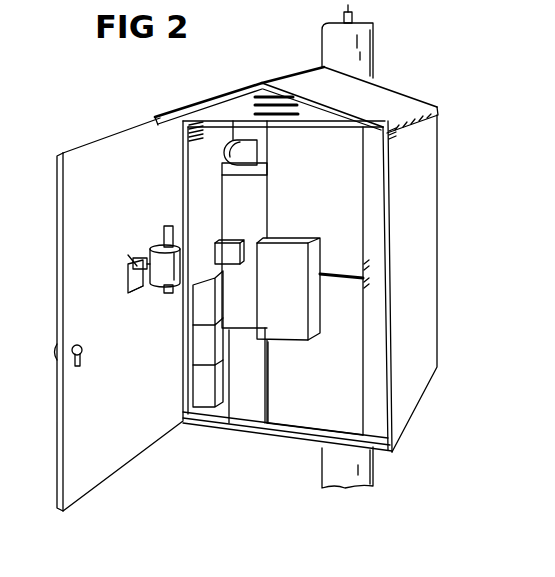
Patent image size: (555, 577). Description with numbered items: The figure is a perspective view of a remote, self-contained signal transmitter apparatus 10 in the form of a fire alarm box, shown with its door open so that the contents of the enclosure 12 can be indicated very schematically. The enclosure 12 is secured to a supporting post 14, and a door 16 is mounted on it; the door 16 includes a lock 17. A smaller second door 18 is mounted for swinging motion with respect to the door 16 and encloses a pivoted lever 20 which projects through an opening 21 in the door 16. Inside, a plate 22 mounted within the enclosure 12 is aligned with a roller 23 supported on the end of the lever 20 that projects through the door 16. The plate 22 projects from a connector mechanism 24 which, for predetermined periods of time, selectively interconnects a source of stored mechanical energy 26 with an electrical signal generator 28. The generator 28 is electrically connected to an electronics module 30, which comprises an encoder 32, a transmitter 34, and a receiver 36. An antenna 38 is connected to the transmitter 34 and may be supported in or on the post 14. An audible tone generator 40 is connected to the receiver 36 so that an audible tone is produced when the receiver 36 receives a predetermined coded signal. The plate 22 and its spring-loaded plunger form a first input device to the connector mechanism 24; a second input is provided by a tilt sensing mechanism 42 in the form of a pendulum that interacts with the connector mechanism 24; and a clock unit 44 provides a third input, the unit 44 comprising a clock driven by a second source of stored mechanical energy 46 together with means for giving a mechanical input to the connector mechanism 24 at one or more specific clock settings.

The signal transmitter apparatus 10 is at (147, 103).
The enclosure 12 is at (406, 90).
The supporting post 14 is at (319, 42).
The door 16 is at (108, 428).
The lock 17 is at (72, 361).
The second door 18 is at (164, 257).
The pivoted lever 20 is at (131, 261).
The opening 21 is at (143, 290).
The plate 22 is at (214, 250).
The roller 23 is at (128, 274).
The connector mechanism 24 is at (221, 201).
The source of stored mechanical energy 26 is at (341, 195).
The electrical signal generator 28 is at (214, 147).
The electronics module 30 is at (199, 419).
The encoder 32 is at (204, 368).
The transmitter 34 is at (203, 330).
The receiver 36 is at (200, 294).
The antenna 38 is at (356, 11).
The audible tone generator 40 is at (301, 113).
The tilt sensing mechanism 42 is at (291, 301).
The clock unit 44 is at (248, 378).
The second source of stored mechanical energy 46 is at (327, 388).